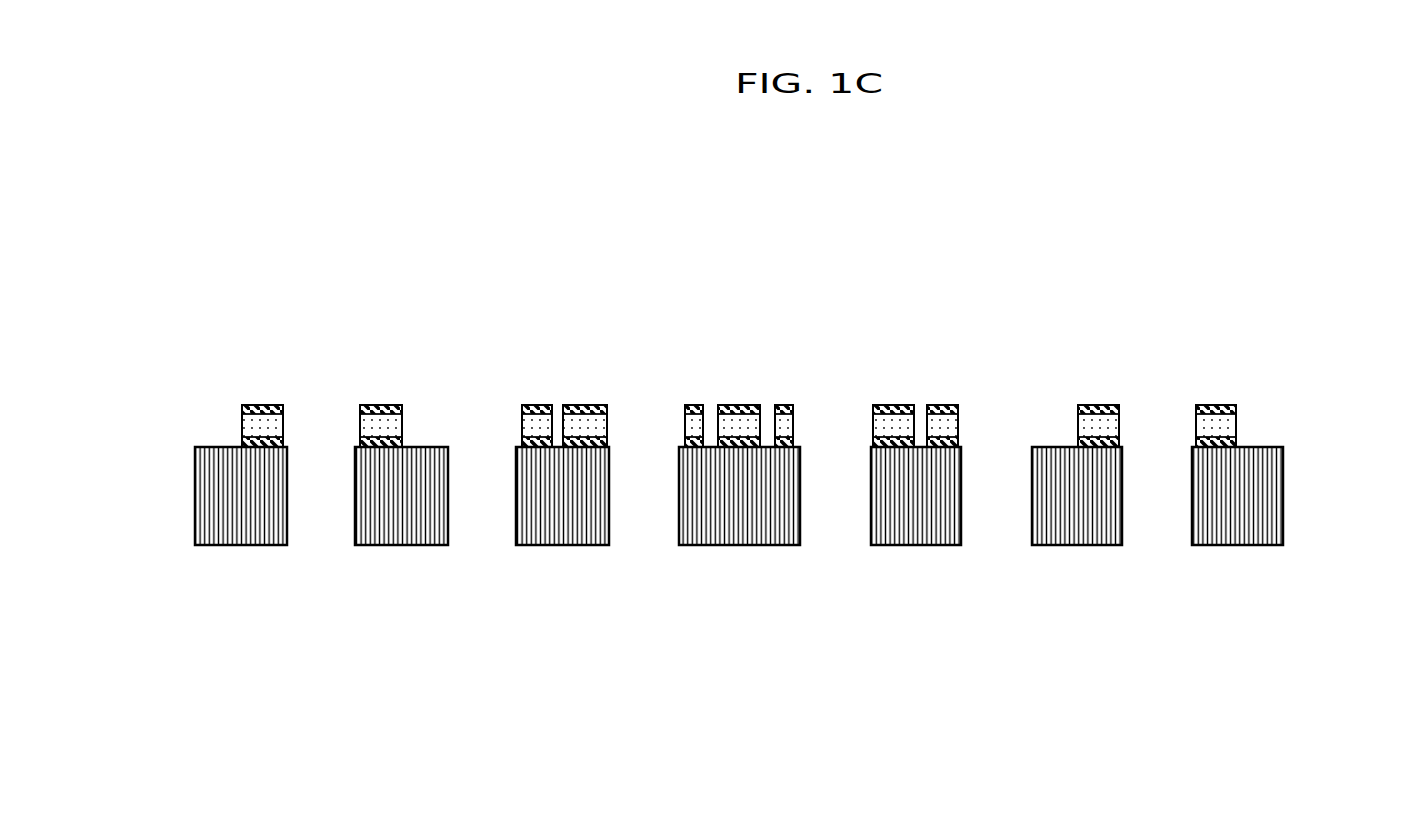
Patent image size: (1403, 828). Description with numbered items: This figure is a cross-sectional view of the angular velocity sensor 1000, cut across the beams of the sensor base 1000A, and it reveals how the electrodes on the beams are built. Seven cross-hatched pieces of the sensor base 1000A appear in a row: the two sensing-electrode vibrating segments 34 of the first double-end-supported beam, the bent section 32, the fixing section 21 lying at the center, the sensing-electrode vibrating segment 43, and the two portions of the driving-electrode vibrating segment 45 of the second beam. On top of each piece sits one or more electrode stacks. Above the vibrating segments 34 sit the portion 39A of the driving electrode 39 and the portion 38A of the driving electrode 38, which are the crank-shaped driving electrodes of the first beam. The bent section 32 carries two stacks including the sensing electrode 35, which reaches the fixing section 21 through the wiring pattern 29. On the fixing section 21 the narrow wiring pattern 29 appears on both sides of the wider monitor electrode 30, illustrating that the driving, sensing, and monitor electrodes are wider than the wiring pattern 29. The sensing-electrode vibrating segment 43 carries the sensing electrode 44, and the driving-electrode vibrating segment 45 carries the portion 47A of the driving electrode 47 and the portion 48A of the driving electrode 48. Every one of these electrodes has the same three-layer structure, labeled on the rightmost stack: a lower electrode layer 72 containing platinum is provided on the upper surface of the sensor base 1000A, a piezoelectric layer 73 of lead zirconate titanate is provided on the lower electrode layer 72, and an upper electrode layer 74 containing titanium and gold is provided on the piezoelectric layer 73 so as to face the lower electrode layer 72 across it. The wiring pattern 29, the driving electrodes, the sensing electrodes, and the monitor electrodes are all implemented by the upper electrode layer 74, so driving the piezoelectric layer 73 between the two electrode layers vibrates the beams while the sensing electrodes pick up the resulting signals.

The angular velocity sensor 1000 is at (1278, 292).
The sensor base 1000A is at (1270, 488).
The fixing section 21 is at (737, 535).
The wiring pattern 29 is at (695, 405).
The monitor electrode 30 is at (733, 405).
The bent section 32 is at (557, 532).
The sensing-electrode vibrating segment 34 is at (270, 532).
The sensing electrode 35 is at (586, 405).
The driving electrode 38 is at (381, 426).
The portion of driving electrode 38 38A is at (375, 405).
The driving electrode 39 is at (262, 426).
The portion of driving electrode 39 39A is at (251, 405).
The sensing-electrode vibrating segment 43 is at (910, 532).
The sensing electrode 44 is at (899, 410).
The driving-electrode vibrating segment 45 is at (1098, 532).
The driving electrode 47 is at (1098, 426).
The portion of driving electrode 47 47A is at (1085, 405).
The driving electrode 48 is at (1259, 389).
The portion of driving electrode 48 48A is at (1205, 406).
The lower electrode layer 72 is at (1233, 443).
The piezoelectric layer 73 is at (1228, 428).
The upper electrode layer 74 is at (1235, 410).